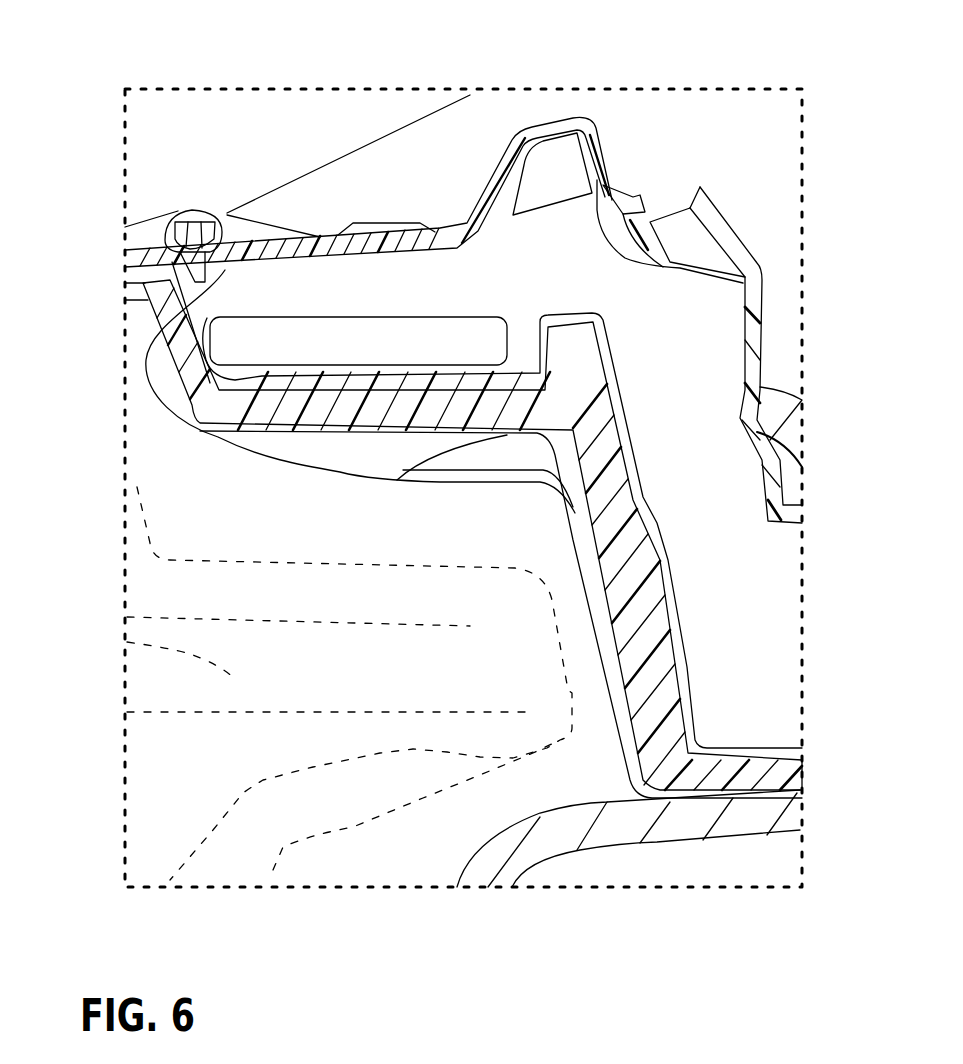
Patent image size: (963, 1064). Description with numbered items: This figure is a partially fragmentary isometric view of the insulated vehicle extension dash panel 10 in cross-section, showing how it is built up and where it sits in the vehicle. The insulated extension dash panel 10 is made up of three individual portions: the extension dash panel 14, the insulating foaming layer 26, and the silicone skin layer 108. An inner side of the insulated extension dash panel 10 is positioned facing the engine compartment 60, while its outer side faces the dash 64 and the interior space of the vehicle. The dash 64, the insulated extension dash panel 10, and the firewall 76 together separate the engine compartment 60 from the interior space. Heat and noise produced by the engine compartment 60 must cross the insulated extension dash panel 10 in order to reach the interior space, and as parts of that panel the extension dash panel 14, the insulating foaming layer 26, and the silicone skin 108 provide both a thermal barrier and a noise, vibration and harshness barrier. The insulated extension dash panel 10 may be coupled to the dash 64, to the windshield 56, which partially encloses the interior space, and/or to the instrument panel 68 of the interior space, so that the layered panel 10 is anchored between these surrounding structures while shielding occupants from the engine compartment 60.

The insulated vehicle extension dash panel 10 is at (812, 769).
The extension dash panel 14 is at (225, 270).
The insulating foaming layer 26 is at (175, 328).
The windshield 56 is at (365, 152).
The engine compartment 60 is at (125, 643).
The dash 64 is at (753, 339).
The instrument panel 68 is at (540, 137).
The firewall 76 is at (673, 822).
The silicone skin layer 108 is at (225, 345).